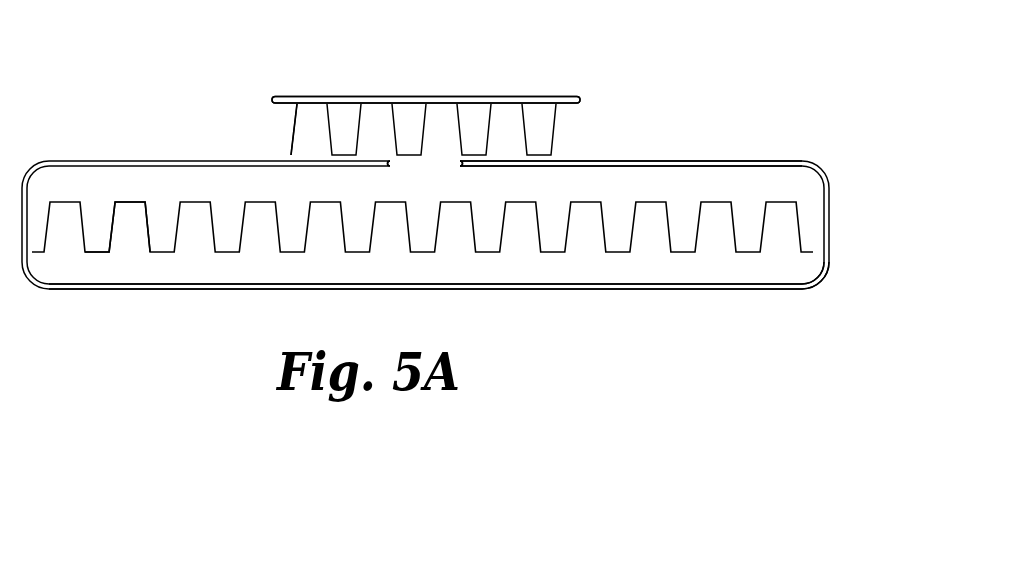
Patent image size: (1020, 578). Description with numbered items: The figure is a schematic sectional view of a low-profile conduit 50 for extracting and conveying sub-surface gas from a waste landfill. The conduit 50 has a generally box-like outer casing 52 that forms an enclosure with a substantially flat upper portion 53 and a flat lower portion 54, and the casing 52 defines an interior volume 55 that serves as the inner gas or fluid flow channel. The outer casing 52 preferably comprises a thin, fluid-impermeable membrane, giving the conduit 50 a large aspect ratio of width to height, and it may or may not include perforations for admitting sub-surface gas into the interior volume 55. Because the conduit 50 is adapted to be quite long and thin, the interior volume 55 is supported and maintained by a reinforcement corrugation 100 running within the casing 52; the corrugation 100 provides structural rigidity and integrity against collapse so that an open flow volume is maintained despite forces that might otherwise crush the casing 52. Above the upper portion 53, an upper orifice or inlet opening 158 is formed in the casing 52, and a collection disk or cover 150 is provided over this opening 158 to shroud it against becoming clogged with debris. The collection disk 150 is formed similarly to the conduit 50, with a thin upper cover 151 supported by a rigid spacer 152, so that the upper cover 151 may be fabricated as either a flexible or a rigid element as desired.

The conduit 50 is at (864, 211).
The outer casing 52 is at (742, 289).
The upper portion 53 is at (684, 157).
The lower portion 54 is at (615, 289).
The interior volume 55 is at (158, 196).
The reinforcement corrugation 100 is at (113, 235).
The collection disk 150 is at (549, 93).
The upper cover 151 is at (451, 94).
The spacer 152 is at (289, 134).
The opening 158 is at (438, 162).